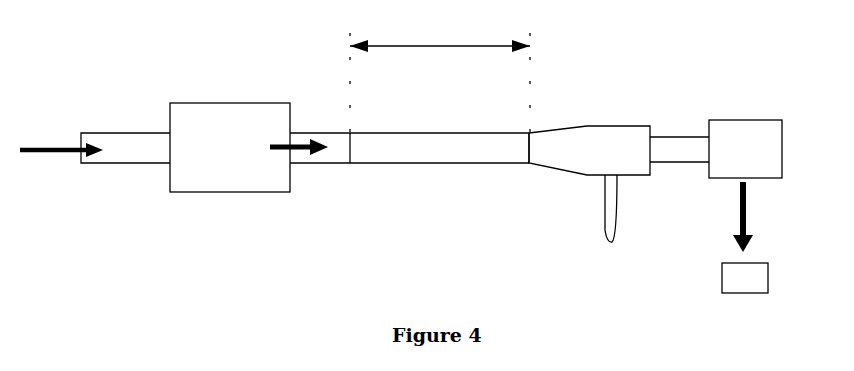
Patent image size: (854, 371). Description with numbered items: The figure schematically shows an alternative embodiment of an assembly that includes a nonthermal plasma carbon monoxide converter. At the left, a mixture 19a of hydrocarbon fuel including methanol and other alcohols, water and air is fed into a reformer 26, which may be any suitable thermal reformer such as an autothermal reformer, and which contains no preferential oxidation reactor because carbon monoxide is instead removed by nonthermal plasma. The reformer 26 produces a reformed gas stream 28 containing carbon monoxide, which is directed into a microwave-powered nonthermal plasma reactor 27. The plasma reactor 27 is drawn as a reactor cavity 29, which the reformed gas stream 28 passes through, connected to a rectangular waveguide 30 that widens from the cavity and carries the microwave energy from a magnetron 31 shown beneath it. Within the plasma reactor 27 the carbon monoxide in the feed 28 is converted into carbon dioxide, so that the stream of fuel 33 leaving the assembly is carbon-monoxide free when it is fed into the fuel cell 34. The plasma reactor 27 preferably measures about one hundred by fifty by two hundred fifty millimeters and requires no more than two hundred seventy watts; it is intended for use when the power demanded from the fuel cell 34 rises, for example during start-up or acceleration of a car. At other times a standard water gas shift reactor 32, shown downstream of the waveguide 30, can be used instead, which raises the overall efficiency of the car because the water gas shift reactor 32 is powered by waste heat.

The mixture 19a is at (95, 137).
The reformer 26 is at (187, 130).
The microwave-powered nonthermal plasma reactor 27 is at (440, 79).
The reformed gas stream 28 is at (307, 157).
The reactor cavity 29 is at (425, 152).
The rectangular waveguide 30 is at (567, 170).
The magnetron 31 is at (610, 228).
The water gas shift reactor 32 is at (735, 138).
The stream of fuel 33 is at (735, 203).
The fuel cell 34 is at (753, 278).